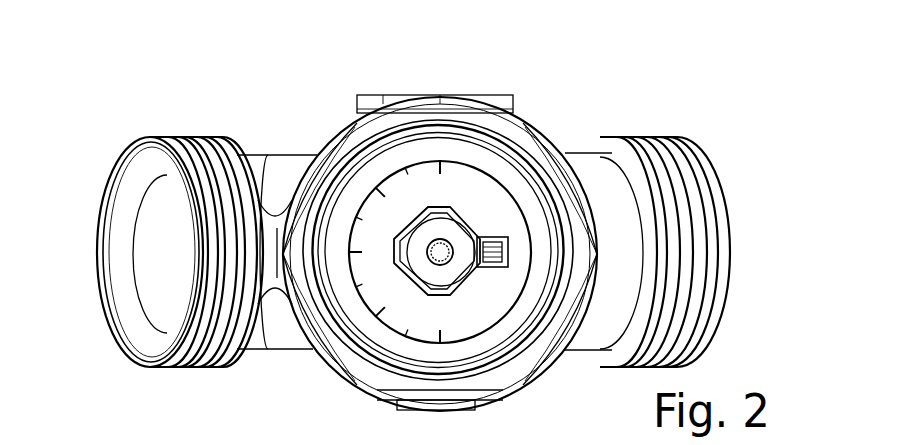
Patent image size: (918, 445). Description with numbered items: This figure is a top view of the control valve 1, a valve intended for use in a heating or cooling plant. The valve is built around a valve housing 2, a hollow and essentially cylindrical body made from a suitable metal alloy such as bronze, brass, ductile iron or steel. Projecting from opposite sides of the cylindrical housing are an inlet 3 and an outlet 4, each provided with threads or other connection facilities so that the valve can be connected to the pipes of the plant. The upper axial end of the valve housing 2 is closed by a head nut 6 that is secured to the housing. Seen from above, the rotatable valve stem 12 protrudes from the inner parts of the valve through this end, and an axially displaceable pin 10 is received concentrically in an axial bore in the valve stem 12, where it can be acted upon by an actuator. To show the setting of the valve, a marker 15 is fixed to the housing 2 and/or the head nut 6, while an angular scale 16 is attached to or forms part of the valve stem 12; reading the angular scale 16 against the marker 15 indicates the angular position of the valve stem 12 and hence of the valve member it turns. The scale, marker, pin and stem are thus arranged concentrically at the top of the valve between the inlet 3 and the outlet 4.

The control valve 1 is at (232, 52).
The valve housing 2 is at (305, 157).
The inlet 3 is at (125, 285).
The outlet 4 is at (730, 252).
The head nut 6 is at (510, 133).
The axially displaceable pin 10 is at (447, 245).
The rotatable valve stem 12 is at (457, 283).
The marker 15 is at (503, 238).
The angular scale 16 is at (400, 318).